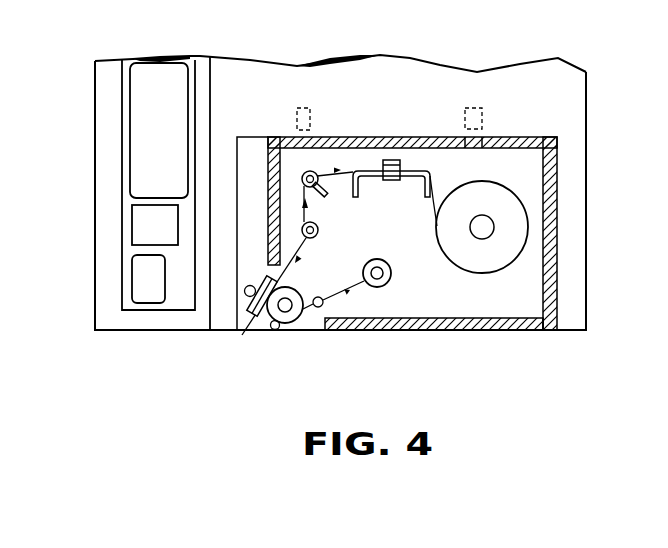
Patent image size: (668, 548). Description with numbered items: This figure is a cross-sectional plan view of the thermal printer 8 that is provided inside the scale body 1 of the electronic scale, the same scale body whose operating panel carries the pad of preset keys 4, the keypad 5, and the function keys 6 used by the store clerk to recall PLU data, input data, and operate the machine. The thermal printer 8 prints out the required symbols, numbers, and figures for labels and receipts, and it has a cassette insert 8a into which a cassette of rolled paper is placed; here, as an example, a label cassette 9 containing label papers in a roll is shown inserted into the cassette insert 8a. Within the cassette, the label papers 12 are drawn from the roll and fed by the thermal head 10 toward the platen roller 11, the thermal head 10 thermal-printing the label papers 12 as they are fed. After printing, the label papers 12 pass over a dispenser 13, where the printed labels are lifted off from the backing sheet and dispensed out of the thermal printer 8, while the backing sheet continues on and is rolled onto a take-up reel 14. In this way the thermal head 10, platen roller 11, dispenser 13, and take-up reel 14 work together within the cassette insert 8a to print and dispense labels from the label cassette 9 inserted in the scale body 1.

The scale body 1 is at (586, 278).
The pad of preset keys 4 is at (137, 117).
The keypad 5 is at (137, 223).
The function keys 6 is at (138, 285).
The thermal printer 8 is at (383, 338).
The cassette insert 8a is at (425, 331).
The label cassette 9 is at (495, 331).
The thermal head 10 is at (242, 335).
The platen roller 11 is at (288, 322).
The label papers 12 is at (517, 205).
The dispenser 13 is at (273, 330).
The take-up reel 14 is at (392, 274).